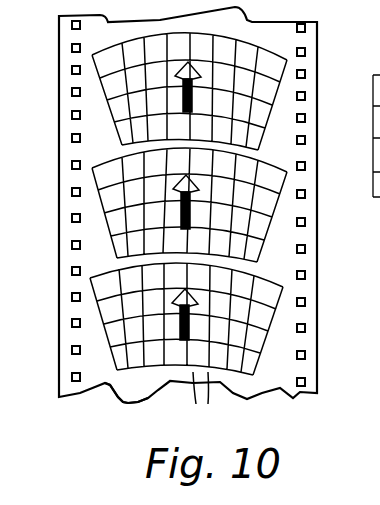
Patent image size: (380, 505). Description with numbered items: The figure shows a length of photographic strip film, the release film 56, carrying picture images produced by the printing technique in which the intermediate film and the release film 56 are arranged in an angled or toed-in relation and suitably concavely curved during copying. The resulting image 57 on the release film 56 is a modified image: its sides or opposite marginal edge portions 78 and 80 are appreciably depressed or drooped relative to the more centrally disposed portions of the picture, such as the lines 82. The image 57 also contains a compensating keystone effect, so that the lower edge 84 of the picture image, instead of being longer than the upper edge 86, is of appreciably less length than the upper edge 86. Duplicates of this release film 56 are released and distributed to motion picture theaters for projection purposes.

The release film 56 is at (307, 327).
The image 57 is at (253, 225).
The marginal edge portion 78 is at (110, 333).
The marginal edge portion 80 is at (280, 317).
The lines 82 is at (208, 401).
The lower edge 84 is at (130, 373).
The upper edge 86 is at (107, 271).